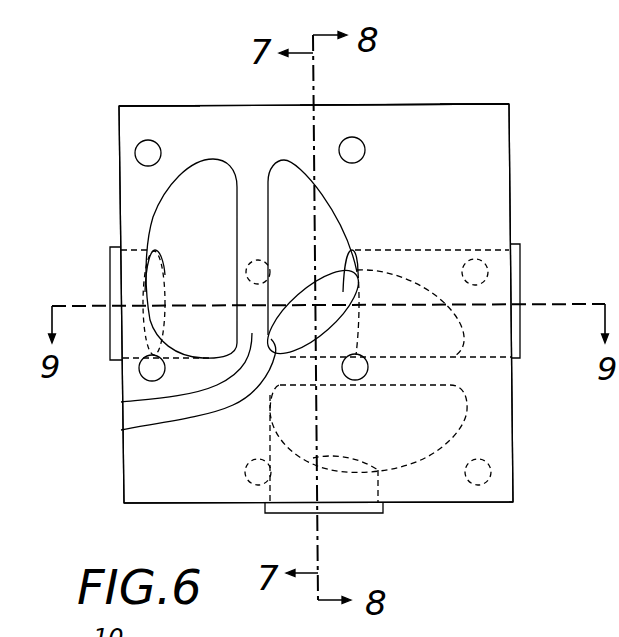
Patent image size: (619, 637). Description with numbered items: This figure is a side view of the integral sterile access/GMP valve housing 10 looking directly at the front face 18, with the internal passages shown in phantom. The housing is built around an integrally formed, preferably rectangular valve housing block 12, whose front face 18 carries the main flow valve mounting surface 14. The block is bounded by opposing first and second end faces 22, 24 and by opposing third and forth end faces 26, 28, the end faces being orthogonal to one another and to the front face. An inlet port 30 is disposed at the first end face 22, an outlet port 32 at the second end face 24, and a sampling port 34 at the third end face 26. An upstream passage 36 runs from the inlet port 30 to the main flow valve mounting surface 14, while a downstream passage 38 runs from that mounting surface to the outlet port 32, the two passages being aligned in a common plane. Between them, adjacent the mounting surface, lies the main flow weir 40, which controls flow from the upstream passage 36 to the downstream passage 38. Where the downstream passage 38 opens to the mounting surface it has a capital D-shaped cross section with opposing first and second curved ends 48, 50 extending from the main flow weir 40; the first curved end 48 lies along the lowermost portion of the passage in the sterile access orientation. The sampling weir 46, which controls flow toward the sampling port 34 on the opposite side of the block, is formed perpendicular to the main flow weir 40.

The valve housing 10 is at (150, 66).
The valve housing block 12 is at (137, 105).
The main flow valve mounting surface 14 is at (202, 137).
The front face 18 is at (468, 117).
The first end face 22 is at (119, 147).
The second end face 24 is at (509, 146).
The third end face 26 is at (156, 503).
The forth end face 28 is at (357, 106).
The inlet port 30 is at (113, 247).
The outlet port 32 is at (516, 244).
The sampling port 34 is at (263, 503).
The upstream passage 36 is at (188, 218).
The downstream passage 38 is at (292, 196).
The main flow weir 40 is at (121, 402).
The sampling weir 46 is at (424, 374).
The first curved end 48 is at (121, 430).
The second curved end 50 is at (277, 160).